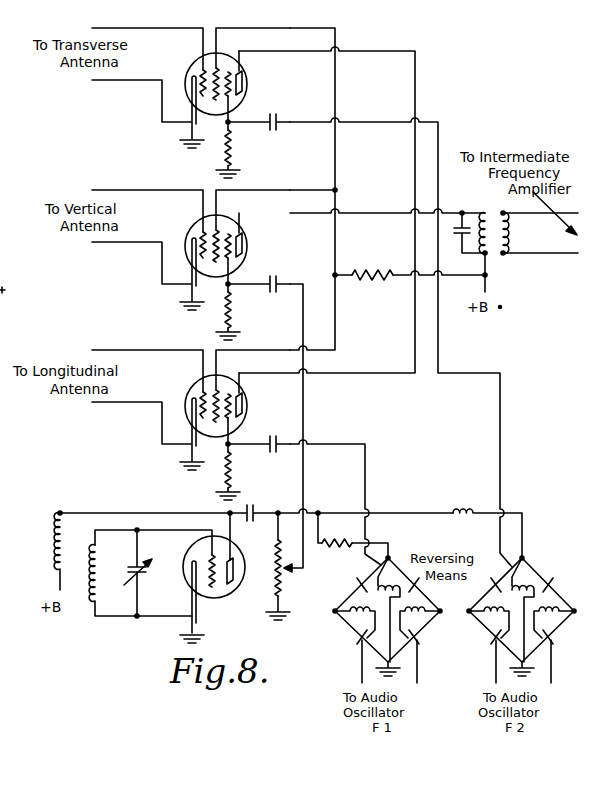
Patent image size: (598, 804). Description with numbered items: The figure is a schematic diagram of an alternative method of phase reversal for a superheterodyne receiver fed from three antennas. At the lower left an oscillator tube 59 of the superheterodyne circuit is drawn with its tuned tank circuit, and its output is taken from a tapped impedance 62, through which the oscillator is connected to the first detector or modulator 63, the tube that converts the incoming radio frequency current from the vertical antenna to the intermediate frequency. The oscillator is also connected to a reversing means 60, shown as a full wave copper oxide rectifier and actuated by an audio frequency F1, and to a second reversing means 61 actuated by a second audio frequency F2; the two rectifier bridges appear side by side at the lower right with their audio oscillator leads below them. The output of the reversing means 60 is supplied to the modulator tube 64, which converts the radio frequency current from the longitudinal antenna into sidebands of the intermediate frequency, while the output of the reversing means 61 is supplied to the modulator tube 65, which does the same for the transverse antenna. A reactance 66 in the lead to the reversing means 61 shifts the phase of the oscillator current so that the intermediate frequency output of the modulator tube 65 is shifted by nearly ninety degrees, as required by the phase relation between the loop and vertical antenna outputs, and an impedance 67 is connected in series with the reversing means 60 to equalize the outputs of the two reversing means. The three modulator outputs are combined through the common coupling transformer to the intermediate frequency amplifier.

The modulator tube 65 is at (247, 88).
The first detector or modulator 63 is at (247, 250).
The modulator tube 64 is at (247, 410).
The local oscillator tube 59 is at (212, 578).
The impedance 62 is at (287, 566).
The reactance 66 is at (487, 522).
The impedance 67 is at (352, 543).
The reversing means 60 is at (357, 633).
The second reversing means 61 is at (490, 630).